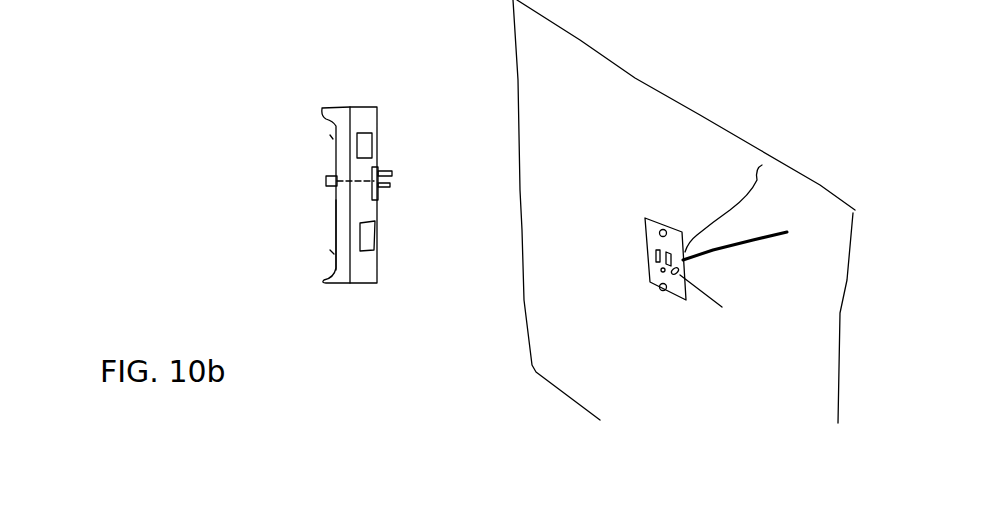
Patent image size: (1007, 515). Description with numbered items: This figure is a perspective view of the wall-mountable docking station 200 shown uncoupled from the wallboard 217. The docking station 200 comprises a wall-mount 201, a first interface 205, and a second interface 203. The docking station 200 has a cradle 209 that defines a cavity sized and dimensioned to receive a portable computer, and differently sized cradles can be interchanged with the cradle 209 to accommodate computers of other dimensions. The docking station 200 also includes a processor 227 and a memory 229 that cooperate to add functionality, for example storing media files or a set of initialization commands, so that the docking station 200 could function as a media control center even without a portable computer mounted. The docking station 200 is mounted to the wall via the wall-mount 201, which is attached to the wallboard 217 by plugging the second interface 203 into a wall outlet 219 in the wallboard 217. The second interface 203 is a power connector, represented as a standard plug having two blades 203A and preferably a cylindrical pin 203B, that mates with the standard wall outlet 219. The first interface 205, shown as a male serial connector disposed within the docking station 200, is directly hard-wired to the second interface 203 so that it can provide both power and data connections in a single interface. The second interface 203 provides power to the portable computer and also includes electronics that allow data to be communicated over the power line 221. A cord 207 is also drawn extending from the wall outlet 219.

The wall-mountable docking station 200 is at (345, 187).
The wall-mount 201 is at (369, 270).
The second interface 203 is at (419, 173).
The blades 203A is at (389, 155).
The cylindrical pin 203B is at (421, 222).
The first interface 205 is at (325, 181).
The power cord 207 is at (773, 223).
The cradle 209 is at (328, 222).
The wallboard 217 is at (565, 48).
The wall outlet 219 is at (651, 217).
The power line 221 is at (748, 165).
The processor 227 is at (367, 142).
The memory 229 is at (373, 243).